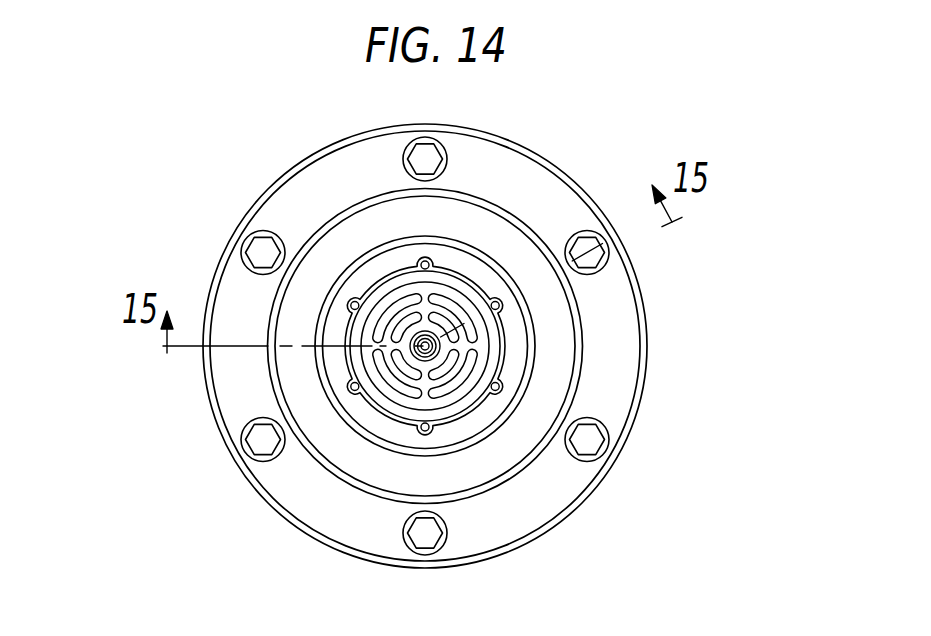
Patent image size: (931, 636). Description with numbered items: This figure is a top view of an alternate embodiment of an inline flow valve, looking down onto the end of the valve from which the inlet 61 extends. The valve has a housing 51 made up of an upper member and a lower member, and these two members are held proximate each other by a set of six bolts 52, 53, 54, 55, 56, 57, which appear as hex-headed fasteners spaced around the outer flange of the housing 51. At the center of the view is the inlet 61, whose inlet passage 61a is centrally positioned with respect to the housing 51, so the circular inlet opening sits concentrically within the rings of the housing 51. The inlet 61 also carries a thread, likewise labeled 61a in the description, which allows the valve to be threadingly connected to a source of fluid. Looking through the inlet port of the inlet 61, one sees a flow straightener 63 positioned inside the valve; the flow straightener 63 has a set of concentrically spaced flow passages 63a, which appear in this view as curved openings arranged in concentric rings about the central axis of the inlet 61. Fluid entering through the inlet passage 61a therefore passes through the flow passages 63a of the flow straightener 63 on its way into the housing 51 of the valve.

The housing 51 is at (560, 341).
The bolt 52 is at (601, 458).
The bolt 53 is at (407, 547).
The bolt 54 is at (249, 458).
The bolt 55 is at (243, 247).
The bolt 56 is at (408, 147).
The bolt 57 is at (590, 240).
The inlet 61 is at (447, 277).
The inlet passage 61a is at (480, 312).
The flow straightener 63 is at (455, 331).
The flow passages 63a is at (498, 393).